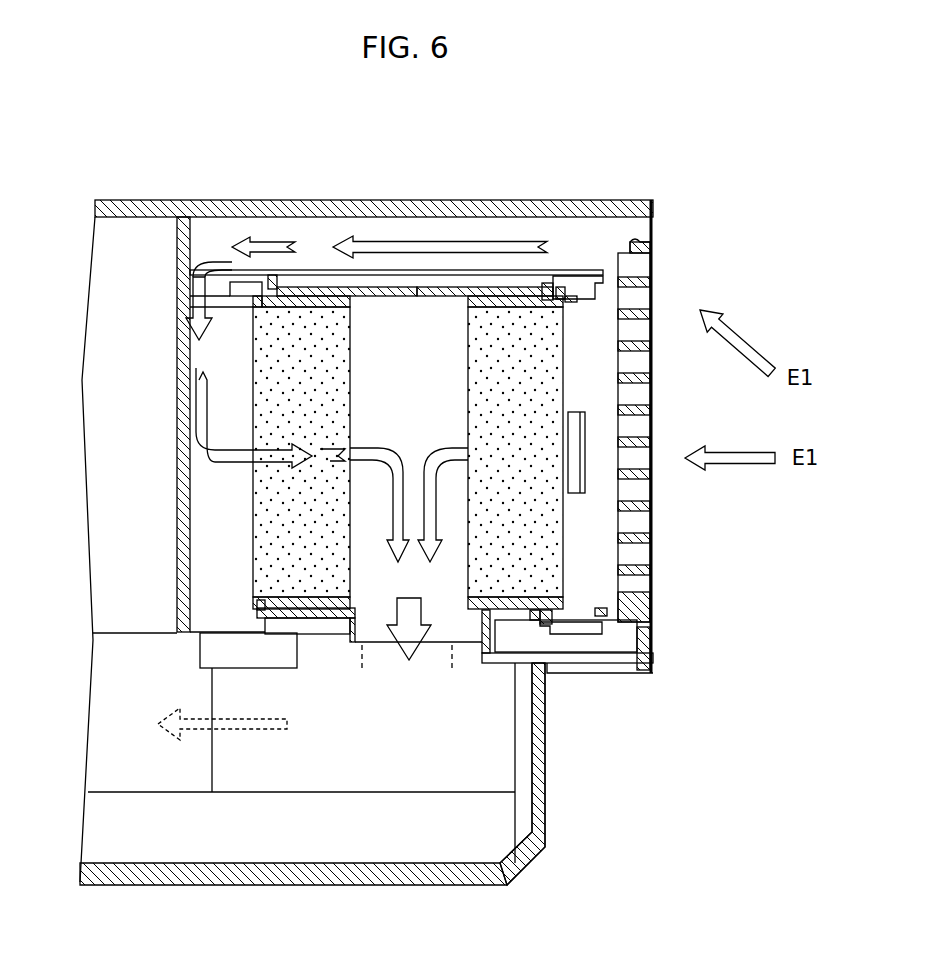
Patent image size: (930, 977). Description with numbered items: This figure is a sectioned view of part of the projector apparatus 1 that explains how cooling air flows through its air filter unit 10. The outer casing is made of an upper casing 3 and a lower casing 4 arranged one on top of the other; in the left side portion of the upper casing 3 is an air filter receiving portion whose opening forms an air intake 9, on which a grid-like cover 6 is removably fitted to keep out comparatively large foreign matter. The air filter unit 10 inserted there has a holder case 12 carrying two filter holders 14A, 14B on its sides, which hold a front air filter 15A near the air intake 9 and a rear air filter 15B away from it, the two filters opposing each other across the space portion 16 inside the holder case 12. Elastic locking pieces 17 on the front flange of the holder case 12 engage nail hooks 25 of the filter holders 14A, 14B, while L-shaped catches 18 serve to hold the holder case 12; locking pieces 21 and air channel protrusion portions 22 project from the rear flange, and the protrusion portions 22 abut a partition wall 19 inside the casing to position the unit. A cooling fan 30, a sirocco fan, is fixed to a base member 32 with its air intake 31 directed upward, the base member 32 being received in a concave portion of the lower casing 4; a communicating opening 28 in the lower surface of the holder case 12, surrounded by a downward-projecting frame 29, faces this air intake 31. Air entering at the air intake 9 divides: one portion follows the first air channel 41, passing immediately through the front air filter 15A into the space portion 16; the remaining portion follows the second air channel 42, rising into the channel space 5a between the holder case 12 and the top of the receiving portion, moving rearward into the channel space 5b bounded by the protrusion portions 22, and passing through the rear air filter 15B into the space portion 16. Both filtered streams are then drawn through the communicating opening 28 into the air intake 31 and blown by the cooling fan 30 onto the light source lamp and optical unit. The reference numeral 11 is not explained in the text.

The projector apparatus 1 is at (673, 183).
The upper casing 3 is at (368, 174).
The lower casing 4 is at (218, 880).
The channel space 5a is at (355, 220).
The channel space 5b is at (205, 352).
The grid-like cover 6 is at (637, 600).
The air intake 9 is at (652, 424).
The air filter unit 10 is at (638, 409).
The outer wall 11 is at (545, 770).
The holder case 12 is at (405, 268).
The filter holder 14A is at (505, 286).
The filter holder 14B is at (232, 419).
The front air filter 15A is at (550, 543).
The rear air filter 15B is at (258, 538).
The space portion 16 is at (388, 516).
The locking piece 17 is at (605, 278).
The catch 18 is at (588, 483).
The partition wall 19 is at (183, 500).
The locking piece 21 is at (270, 292).
The air channel protrusion portion 22 is at (230, 284).
The nail hook 25 is at (235, 300).
The communicating opening 28 is at (485, 625).
The frame 29 is at (548, 612).
The cooling fan 30 is at (420, 778).
The air intake 31 is at (452, 645).
The base member 32 is at (293, 902).
The first air channel 41 is at (470, 415).
The second air channel 42 is at (245, 463).